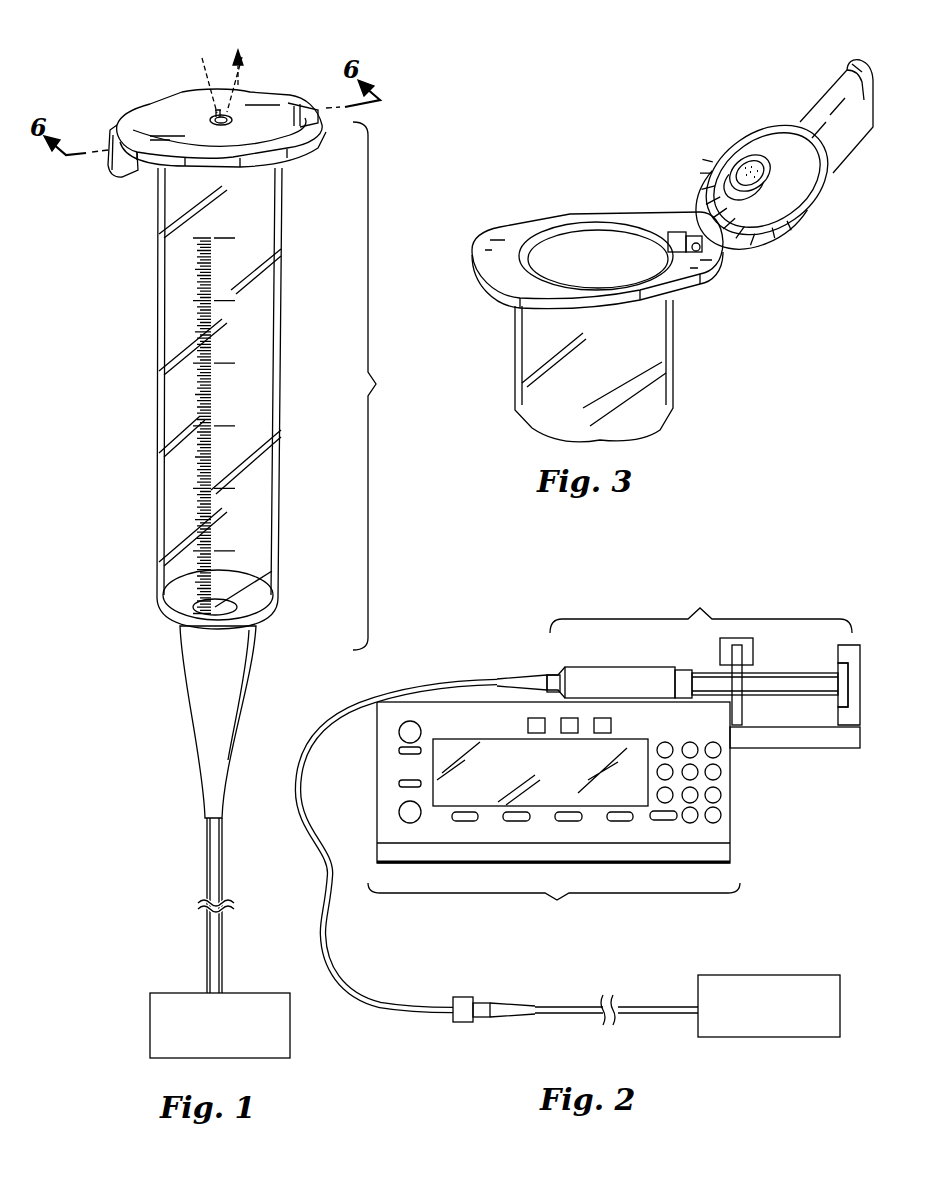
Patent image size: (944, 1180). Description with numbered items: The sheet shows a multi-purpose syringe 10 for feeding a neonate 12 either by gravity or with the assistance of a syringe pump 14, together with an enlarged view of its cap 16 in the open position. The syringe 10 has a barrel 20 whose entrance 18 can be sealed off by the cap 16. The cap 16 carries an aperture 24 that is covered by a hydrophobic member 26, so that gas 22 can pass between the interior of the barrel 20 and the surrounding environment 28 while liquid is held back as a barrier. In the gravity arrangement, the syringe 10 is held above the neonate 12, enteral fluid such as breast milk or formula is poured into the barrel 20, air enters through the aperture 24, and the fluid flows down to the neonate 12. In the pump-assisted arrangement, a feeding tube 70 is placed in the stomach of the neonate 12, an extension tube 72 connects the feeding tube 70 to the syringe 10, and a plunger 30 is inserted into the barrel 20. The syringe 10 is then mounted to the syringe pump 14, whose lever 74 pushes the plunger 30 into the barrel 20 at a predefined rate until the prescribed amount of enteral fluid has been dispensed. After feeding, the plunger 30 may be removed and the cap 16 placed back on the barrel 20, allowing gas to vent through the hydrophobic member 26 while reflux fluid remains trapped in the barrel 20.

In FIG. 1, the multi-purpose syringe 10 is at (260, 501).
In FIG. 2, the multi-purpose syringe 10 is at (699, 645).
In FIG. 1, the neonate 12 is at (262, 992).
In FIG. 2, the neonate 12 is at (790, 975).
In FIG. 2, the syringe pump 14 is at (614, 783).
In FIG. 1, the cap 16 is at (178, 108).
In FIG. 3, the cap 16 is at (778, 245).
In FIG. 3, the entrance 18 is at (585, 238).
In FIG. 1, the barrel 20 is at (172, 322).
In FIG. 2, the barrel 20 is at (647, 667).
In FIG. 3, the barrel 20 is at (652, 350).
In FIG. 1, the gas 22 is at (202, 68).
In FIG. 1, the aperture 24 is at (295, 158).
In FIG. 3, the hydrophobic member 26 is at (746, 158).
In FIG. 1, the environment 28 is at (231, 31).
In FIG. 2, the plunger 30 is at (775, 675).
In FIG. 2, the feeding tube 70 is at (590, 1003).
In FIG. 2, the extension tube 72 is at (440, 678).
In FIG. 2, the lever 74 is at (857, 677).